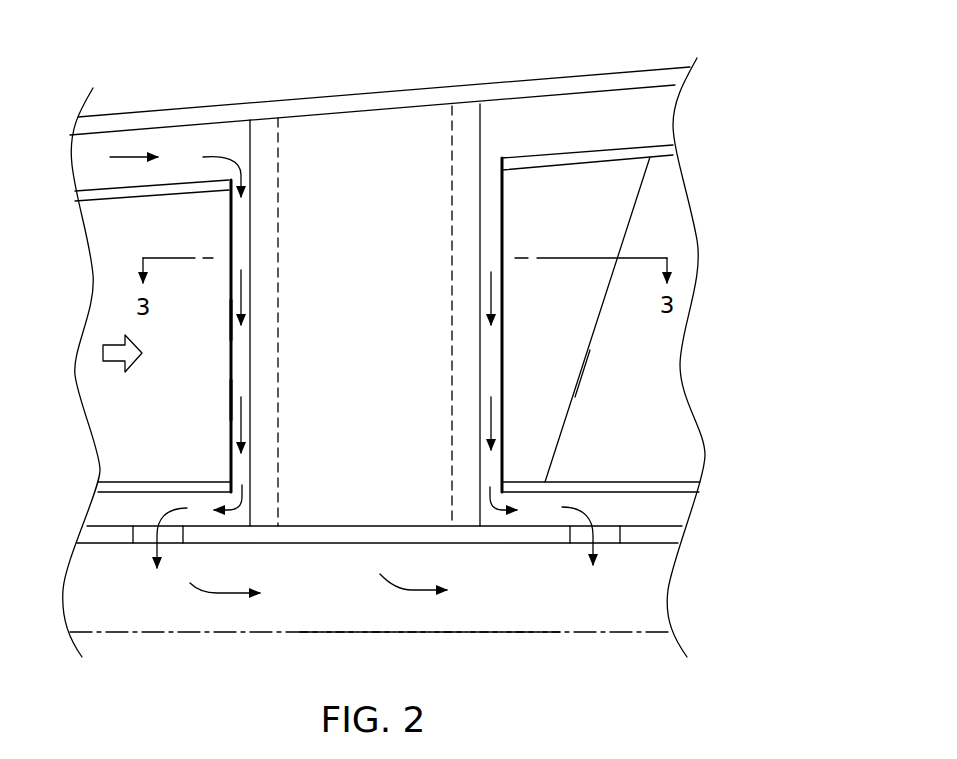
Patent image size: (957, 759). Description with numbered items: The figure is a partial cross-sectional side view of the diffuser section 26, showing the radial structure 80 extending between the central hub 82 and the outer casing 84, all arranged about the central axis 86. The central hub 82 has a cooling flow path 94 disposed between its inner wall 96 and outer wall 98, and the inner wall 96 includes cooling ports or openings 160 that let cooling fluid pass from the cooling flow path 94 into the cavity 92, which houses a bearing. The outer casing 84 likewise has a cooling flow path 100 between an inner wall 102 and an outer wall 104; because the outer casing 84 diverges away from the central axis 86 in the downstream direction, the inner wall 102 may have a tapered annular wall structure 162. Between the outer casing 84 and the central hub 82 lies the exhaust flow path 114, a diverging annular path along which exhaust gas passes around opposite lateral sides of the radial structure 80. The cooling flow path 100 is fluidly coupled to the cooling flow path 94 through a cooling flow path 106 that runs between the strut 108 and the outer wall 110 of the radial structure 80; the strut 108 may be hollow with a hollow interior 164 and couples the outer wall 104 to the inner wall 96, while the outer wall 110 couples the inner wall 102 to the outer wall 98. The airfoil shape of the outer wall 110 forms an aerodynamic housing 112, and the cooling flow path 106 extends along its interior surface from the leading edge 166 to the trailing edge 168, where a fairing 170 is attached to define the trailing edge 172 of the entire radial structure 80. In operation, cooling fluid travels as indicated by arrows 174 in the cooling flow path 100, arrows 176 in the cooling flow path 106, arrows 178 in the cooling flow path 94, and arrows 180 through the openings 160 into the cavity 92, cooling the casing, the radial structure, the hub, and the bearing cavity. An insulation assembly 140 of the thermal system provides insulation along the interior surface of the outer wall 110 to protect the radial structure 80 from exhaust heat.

The diffuser section 26 is at (210, 50).
The radial structure 80 is at (427, 68).
The central hub 82 is at (752, 563).
The outer casing 84 is at (720, 62).
The central axis 86 is at (380, 647).
The cavity 92 is at (545, 615).
The cooling flow path 94 is at (692, 510).
The inner wall 96 is at (682, 537).
The outer wall 98 is at (700, 487).
The cooling flow path 100 is at (668, 113).
The inner wall 102 is at (673, 147).
The outer wall 104 is at (685, 79).
The cooling flow path 106 is at (238, 367).
The strut 108 is at (249, 470).
The outer wall 110 is at (229, 407).
The aerodynamic housing 112 is at (228, 220).
The exhaust flow path 114 is at (113, 340).
The insulation assembly 140 is at (243, 236).
The cooling ports or openings 160 is at (185, 533).
The tapered annular wall structure 162 is at (587, 150).
The hollow interior 164 is at (280, 257).
The leading edge 166 is at (229, 333).
The trailing edge 168 is at (503, 287).
The fairing 170 is at (593, 340).
The trailing edge 172 is at (575, 397).
The arrows 174 is at (130, 157).
The arrows 176 is at (241, 293).
The arrows 178 is at (253, 505).
The arrows 180 is at (152, 545).